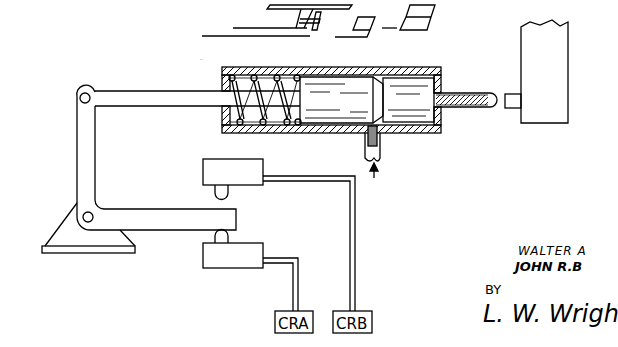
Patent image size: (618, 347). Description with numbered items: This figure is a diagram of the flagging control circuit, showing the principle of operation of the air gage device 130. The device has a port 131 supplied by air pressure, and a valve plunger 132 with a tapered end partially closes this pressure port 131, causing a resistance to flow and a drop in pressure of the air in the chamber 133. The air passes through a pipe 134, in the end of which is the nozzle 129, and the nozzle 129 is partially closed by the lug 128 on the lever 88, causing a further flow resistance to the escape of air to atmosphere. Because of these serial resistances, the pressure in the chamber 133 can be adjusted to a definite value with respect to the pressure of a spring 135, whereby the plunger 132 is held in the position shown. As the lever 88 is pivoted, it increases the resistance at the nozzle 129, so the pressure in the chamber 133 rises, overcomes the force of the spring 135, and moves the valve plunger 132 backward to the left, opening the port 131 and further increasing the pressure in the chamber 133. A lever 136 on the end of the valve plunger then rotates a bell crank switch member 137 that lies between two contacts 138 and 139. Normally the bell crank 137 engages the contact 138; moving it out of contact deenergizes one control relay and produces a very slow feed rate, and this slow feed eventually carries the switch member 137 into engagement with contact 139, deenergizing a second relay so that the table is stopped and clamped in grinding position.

The lever 88 is at (563, 34).
The lug 128 is at (509, 96).
The nozzle 129 is at (489, 101).
The air gage device 130 is at (312, 130).
The port 131 is at (380, 136).
The valve plunger 132 is at (333, 82).
The chamber 133 is at (403, 84).
The pipe 134 is at (452, 95).
The spring 135 is at (255, 75).
The lever 136 is at (131, 97).
The bell crank switch member 137 is at (80, 151).
The contact 138 is at (217, 262).
The contact 139 is at (218, 166).